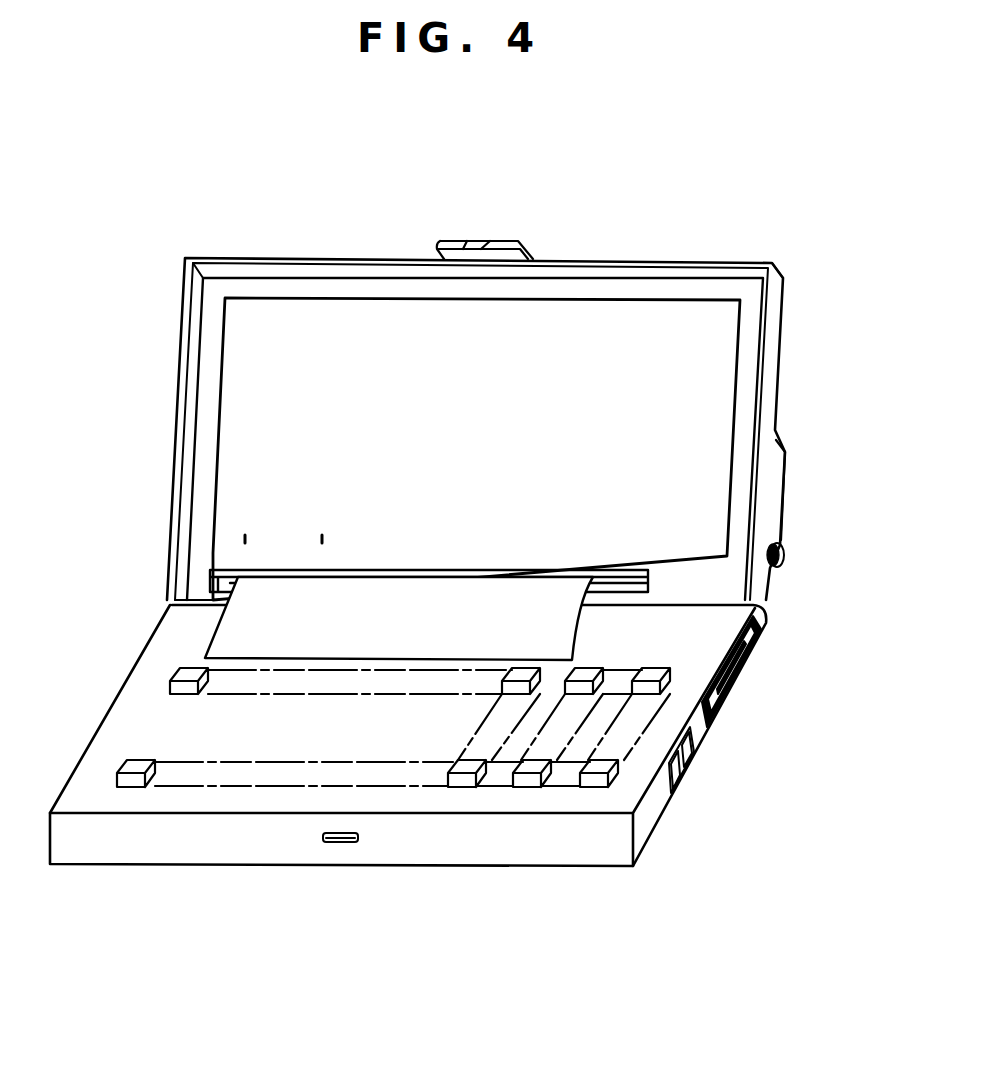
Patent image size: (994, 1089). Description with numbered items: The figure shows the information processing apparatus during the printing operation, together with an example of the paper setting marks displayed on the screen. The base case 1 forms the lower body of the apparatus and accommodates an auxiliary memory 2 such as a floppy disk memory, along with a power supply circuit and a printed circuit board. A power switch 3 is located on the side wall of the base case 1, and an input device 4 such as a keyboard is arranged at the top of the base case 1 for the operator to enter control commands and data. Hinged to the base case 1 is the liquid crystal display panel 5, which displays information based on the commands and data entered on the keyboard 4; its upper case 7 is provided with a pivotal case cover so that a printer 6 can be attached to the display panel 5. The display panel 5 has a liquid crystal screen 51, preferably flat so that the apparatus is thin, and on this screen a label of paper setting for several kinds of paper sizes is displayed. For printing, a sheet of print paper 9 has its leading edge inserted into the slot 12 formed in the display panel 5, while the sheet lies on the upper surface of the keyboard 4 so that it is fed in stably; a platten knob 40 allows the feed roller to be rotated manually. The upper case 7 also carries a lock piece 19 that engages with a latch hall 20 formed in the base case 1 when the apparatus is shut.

The base case 1 is at (660, 822).
The auxiliary memory 2 is at (768, 628).
The power switch 3 is at (678, 775).
The input device 4 is at (458, 786).
The liquid crystal display panel 5 is at (722, 370).
The printer 6 is at (786, 466).
The upper case 7 is at (777, 388).
The print paper 9 is at (216, 643).
The slot 12 is at (623, 583).
The lock piece 19 is at (508, 240).
The latch hall 20 is at (340, 845).
The platten knob 40 is at (786, 556).
The liquid crystal screen 51 is at (676, 313).